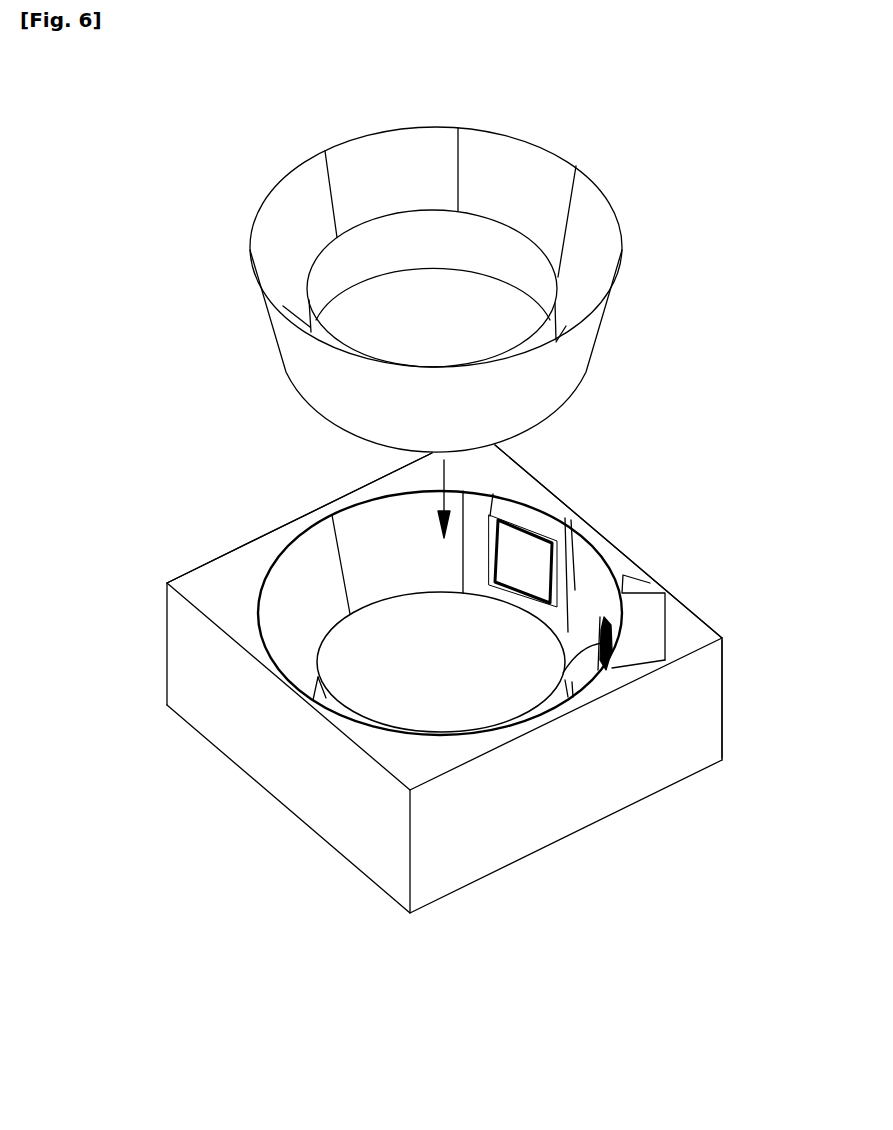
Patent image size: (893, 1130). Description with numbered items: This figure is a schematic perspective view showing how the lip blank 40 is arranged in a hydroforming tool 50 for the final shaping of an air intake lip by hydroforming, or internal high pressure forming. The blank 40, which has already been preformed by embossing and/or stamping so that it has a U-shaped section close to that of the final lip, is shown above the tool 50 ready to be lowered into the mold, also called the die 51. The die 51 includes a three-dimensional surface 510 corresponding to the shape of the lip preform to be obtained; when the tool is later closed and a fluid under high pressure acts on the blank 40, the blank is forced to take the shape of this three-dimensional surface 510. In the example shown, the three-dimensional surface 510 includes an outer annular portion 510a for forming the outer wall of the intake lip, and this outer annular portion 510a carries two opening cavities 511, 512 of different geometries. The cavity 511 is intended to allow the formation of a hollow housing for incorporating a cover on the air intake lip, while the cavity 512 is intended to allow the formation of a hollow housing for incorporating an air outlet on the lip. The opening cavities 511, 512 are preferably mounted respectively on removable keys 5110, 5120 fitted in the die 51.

The lip blank 40 is at (480, 289).
The hydroforming tool 50 is at (471, 664).
The die 51 is at (737, 699).
The three-dimensional surface 510 is at (563, 632).
The outer annular portion 510a is at (303, 592).
The removable key 5110 is at (444, 541).
The opening cavity 511 is at (527, 555).
The removable key 5120 is at (665, 608).
The opening cavity 512 is at (560, 675).